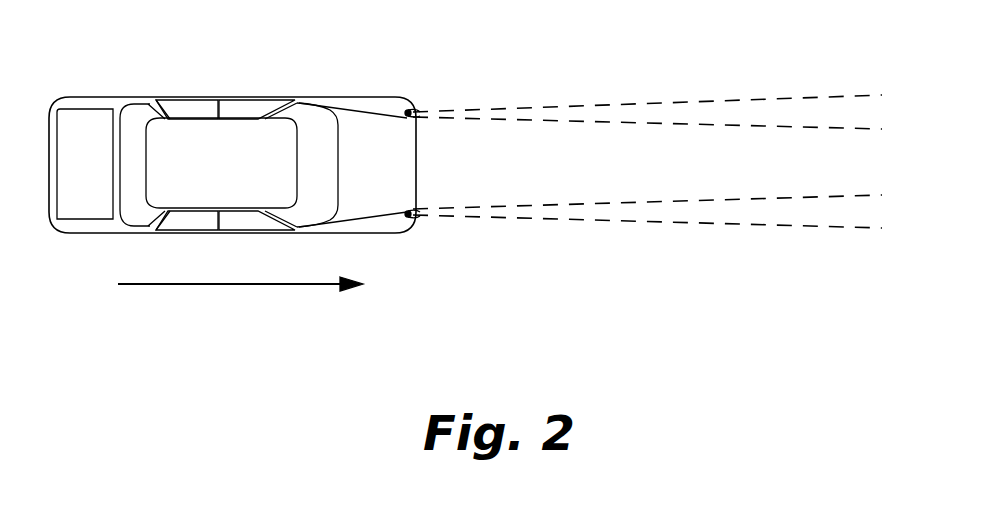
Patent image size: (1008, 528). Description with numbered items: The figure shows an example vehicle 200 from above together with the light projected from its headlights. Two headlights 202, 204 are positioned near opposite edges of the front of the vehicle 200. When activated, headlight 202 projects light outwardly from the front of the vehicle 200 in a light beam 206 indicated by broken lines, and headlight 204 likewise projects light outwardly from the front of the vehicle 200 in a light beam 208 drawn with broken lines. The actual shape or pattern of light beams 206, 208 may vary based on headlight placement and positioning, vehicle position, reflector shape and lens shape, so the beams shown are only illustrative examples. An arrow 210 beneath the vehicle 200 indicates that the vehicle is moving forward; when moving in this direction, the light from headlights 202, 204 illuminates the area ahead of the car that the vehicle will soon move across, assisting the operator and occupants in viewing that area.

The vehicle 200 is at (207, 58).
The headlight 202 is at (410, 108).
The headlight 204 is at (410, 220).
The light beam 206 is at (708, 110).
The light beam 208 is at (708, 218).
The arrow 210 is at (136, 286).